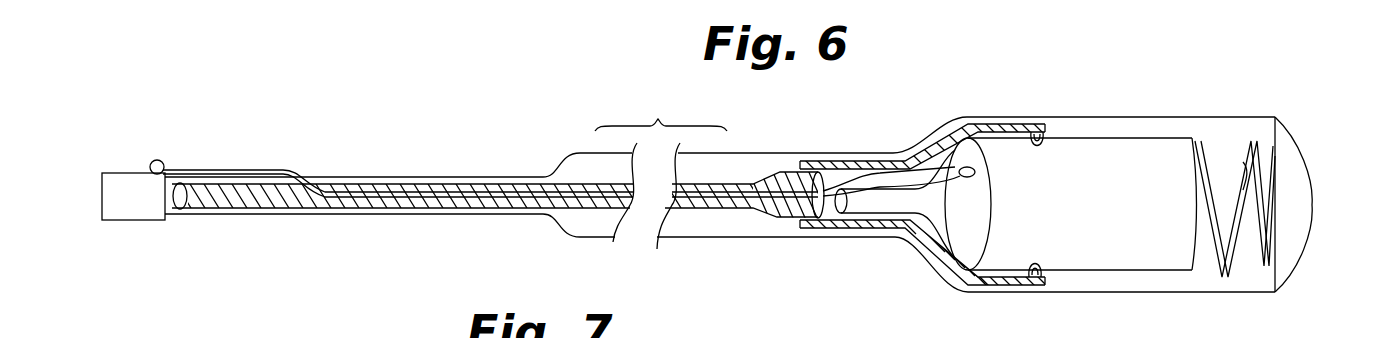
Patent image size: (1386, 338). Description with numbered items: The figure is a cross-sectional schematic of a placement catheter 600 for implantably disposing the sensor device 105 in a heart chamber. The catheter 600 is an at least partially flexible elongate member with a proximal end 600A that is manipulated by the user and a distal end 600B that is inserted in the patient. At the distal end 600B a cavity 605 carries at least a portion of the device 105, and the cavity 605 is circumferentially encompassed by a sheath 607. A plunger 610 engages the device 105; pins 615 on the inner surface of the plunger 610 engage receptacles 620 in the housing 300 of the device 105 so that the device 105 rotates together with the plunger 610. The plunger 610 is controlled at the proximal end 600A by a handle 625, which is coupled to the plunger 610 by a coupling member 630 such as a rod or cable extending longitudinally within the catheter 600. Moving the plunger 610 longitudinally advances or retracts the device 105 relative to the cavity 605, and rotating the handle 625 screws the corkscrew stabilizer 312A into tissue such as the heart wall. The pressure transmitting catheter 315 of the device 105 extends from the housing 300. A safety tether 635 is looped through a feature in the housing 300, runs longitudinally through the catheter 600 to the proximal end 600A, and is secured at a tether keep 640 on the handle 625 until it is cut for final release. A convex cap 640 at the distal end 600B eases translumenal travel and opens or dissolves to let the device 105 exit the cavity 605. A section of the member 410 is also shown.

The placement catheter 600 is at (672, 104).
The proximal end 600A is at (92, 179).
The distal end 600B is at (1298, 121).
The handle 625 is at (130, 207).
The tether keep / convex cap 640 is at (158, 160).
The safety tether 635 is at (261, 171).
The coupling member 630 is at (252, 198).
The housing 300 is at (1113, 138).
The sheath 607 is at (1137, 294).
The plunger 610 is at (982, 124).
The inner sleeve lower wall 410 is at (997, 286).
The pressure transmitting catheter 315 is at (897, 203).
The device 105 is at (1147, 216).
The receptacles 620 is at (1037, 145).
The pins 615 is at (1044, 141).
The cavity 605 is at (1265, 139).
The corkscrew stabilizer 312A is at (1243, 167).